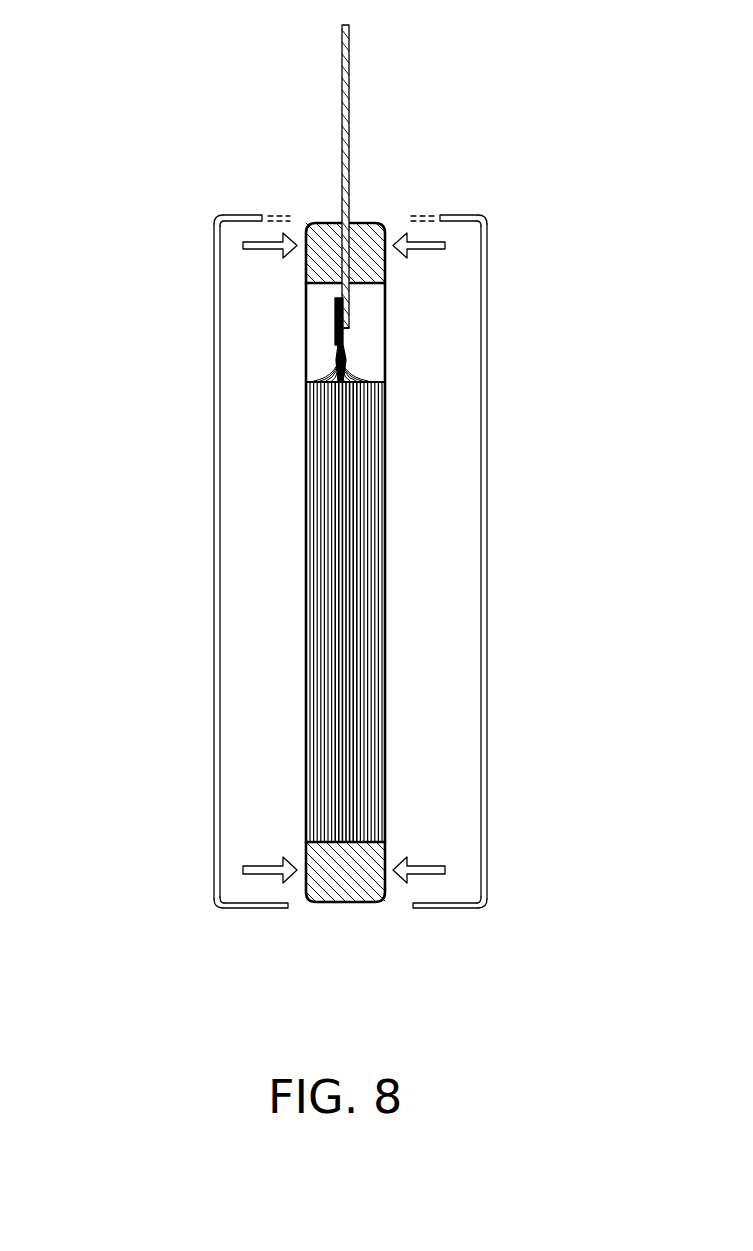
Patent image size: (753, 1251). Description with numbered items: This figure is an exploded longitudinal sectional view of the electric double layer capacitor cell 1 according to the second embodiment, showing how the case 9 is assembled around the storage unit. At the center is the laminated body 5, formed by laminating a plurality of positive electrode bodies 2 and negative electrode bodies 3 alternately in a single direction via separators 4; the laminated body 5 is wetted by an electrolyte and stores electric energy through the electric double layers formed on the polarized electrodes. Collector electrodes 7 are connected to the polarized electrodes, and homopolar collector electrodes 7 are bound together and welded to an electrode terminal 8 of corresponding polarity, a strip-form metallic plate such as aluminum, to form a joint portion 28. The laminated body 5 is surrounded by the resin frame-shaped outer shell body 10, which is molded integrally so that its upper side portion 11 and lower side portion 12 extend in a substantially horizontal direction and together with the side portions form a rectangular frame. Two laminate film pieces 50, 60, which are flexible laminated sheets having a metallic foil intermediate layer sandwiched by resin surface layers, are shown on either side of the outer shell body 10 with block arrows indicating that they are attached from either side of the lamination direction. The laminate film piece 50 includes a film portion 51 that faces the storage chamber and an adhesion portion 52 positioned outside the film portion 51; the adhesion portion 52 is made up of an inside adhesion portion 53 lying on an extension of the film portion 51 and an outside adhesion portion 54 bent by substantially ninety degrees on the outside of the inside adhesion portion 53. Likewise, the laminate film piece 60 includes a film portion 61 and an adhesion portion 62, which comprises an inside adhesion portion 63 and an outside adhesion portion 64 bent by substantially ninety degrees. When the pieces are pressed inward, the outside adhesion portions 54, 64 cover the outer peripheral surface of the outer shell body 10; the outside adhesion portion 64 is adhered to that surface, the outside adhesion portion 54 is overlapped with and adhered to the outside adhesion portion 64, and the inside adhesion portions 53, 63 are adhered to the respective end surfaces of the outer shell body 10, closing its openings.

The electric double layer capacitor cell 1 is at (378, 186).
The positive electrode body 2 is at (306, 636).
The negative electrode body 3 is at (325, 682).
The separator 4 is at (320, 725).
The laminated body 5 is at (172, 618).
The collector electrode 7 is at (357, 348).
The electrode terminal 8 is at (342, 130).
The case 9 is at (500, 663).
The outer shell body 10 is at (393, 279).
The upper side portion 11 is at (380, 245).
The lower side portion 12 is at (343, 890).
The joint portion 28 is at (370, 312).
The laminate film piece 50 is at (85, 790).
The film portion 51 is at (216, 797).
The adhesion portion 52 is at (125, 192).
The inside adhesion portion 53 is at (216, 256).
The outside adhesion portion 54 is at (222, 215).
The laminate film piece 60 is at (635, 790).
The film portion 61 is at (487, 800).
The adhesion portion 62 is at (575, 163).
The inside adhesion portion 63 is at (487, 241).
The outside adhesion portion 64 is at (452, 218).